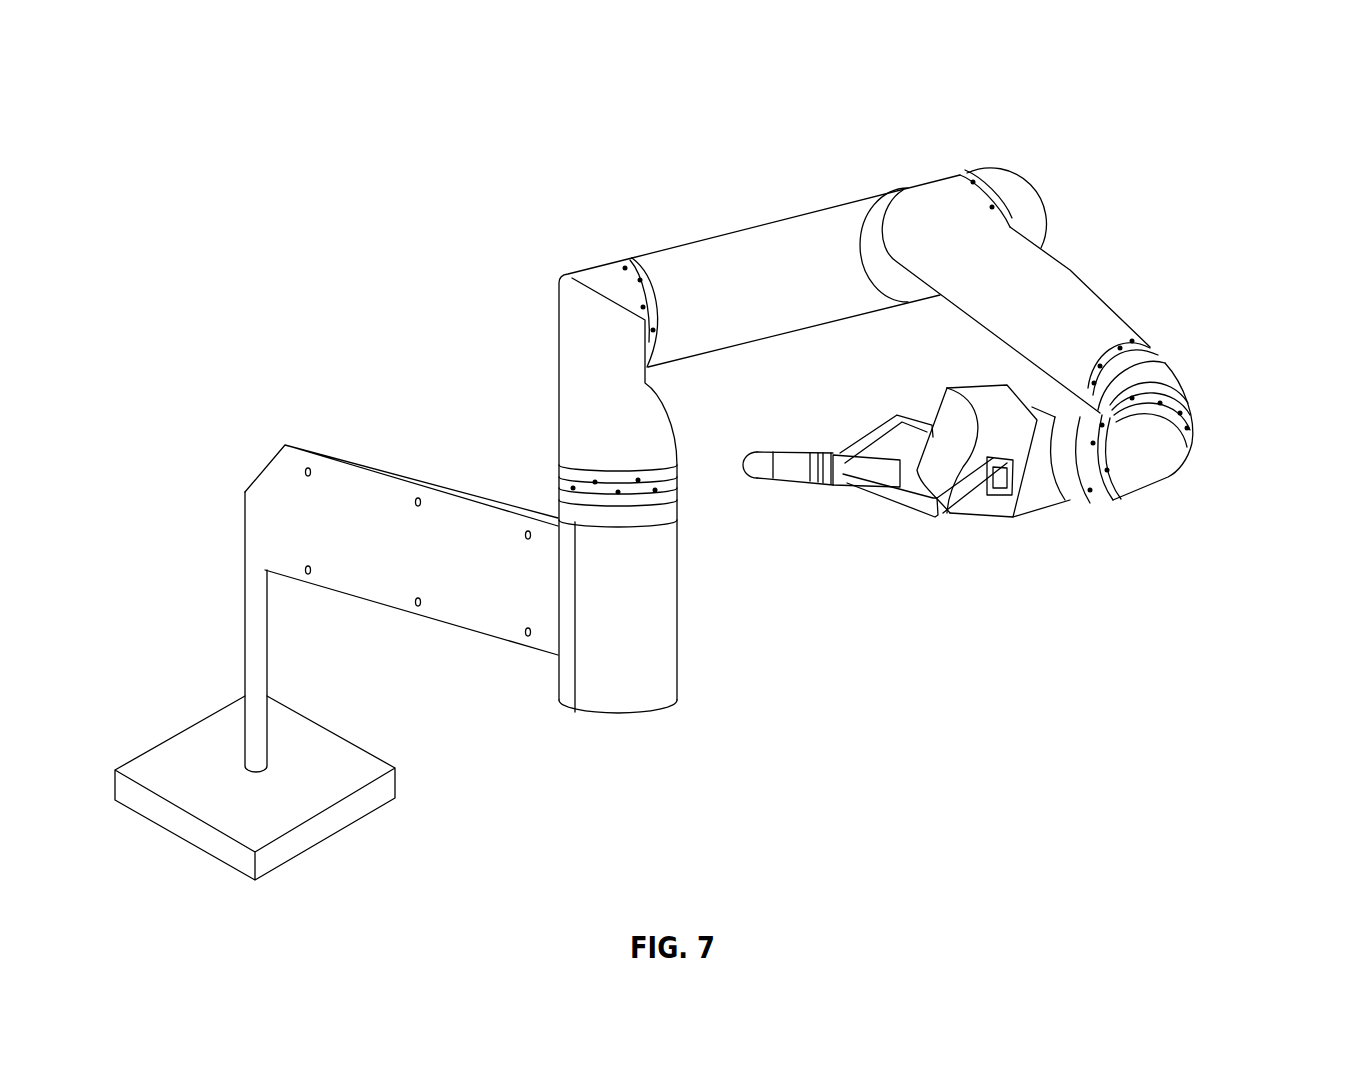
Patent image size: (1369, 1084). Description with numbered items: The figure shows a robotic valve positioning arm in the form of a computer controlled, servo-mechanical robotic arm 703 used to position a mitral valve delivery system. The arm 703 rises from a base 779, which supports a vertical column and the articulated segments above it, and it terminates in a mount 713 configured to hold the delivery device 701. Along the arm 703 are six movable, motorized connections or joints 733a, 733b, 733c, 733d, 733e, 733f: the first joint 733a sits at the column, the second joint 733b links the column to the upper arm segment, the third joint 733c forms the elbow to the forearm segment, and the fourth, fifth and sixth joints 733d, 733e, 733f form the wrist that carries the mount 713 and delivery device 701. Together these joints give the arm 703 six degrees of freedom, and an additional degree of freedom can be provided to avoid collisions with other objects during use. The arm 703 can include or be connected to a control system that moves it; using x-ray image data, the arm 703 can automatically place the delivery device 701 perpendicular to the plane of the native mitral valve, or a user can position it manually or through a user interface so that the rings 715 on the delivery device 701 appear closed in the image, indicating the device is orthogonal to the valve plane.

The robotic arm 703 is at (440, 78).
The delivery device 701 is at (868, 460).
The mount 713 is at (917, 512).
The rings 715 is at (808, 485).
The first joint 733a is at (560, 488).
The second joint 733b is at (630, 260).
The third joint 733c is at (967, 175).
The fourth joint 733d is at (1142, 337).
The fifth joint 733e is at (1190, 417).
The sixth joint 733f is at (1098, 500).
The base 779 is at (333, 750).